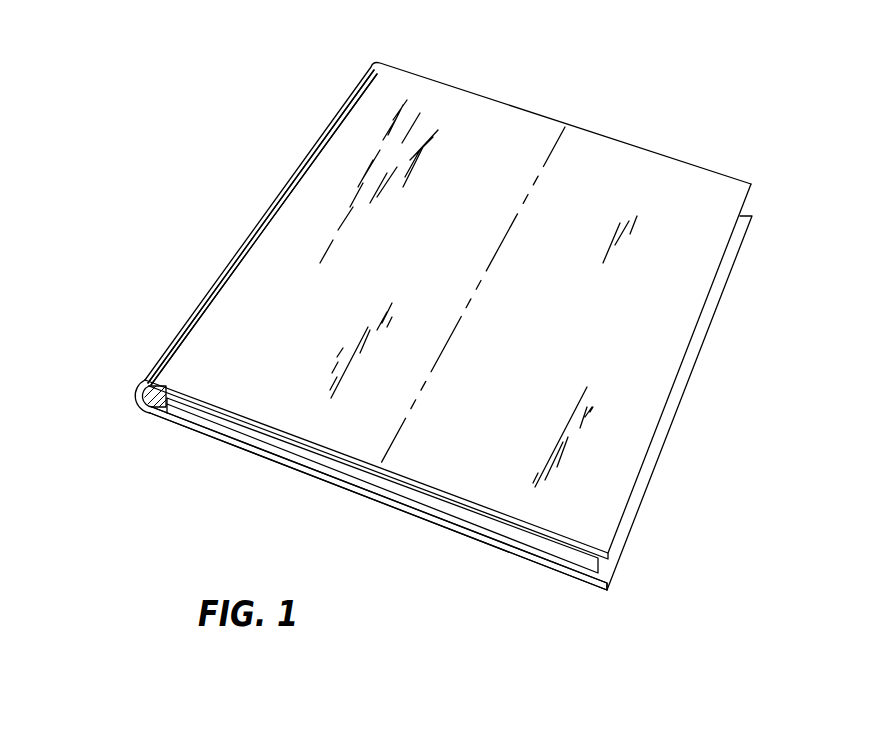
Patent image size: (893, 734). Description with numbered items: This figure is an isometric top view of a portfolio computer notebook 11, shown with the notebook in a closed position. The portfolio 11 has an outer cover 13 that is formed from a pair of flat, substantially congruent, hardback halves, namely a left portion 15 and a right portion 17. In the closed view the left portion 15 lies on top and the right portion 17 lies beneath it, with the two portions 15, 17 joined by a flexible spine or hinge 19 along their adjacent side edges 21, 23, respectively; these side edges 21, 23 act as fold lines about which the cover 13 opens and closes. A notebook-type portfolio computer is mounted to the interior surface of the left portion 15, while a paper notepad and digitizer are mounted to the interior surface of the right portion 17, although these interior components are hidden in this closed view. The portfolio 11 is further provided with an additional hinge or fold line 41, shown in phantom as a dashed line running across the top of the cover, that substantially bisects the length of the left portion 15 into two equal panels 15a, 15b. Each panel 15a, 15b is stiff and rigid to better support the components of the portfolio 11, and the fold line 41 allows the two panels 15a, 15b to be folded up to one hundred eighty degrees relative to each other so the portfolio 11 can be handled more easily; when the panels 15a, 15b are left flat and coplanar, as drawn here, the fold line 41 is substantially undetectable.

The portfolio computer notebook 11 is at (634, 62).
The outer cover 13 is at (258, 175).
The left portion 15 is at (627, 180).
The panel 15a is at (475, 113).
The panel 15b is at (713, 192).
The right portion 17 is at (384, 522).
The flexible spine 19 is at (134, 380).
The side edge 21 is at (186, 327).
The side edge 23 is at (152, 420).
The fold line 41 is at (451, 338).